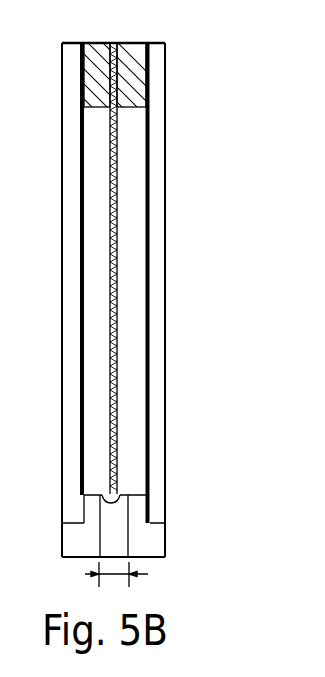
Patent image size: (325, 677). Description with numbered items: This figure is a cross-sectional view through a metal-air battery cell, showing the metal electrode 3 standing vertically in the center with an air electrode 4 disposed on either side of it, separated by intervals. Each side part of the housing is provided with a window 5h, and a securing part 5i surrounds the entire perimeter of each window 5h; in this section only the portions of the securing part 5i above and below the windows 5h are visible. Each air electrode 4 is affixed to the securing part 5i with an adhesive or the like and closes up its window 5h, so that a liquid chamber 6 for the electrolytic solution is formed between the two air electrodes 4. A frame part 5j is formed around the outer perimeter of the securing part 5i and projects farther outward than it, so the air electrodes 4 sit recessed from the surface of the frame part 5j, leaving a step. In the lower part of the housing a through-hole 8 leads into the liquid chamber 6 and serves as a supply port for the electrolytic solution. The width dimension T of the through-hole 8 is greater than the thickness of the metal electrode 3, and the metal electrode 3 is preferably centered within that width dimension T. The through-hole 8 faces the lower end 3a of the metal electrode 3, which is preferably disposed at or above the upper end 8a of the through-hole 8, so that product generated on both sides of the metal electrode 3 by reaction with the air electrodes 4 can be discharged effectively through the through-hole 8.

The metal electrode 3 is at (118, 300).
The lower end of the metal electrode 3a is at (109, 498).
The air electrode 4 is at (80, 352).
The window 5h is at (79, 173).
The securing part 5i is at (96, 79).
The frame part 5j is at (61, 537).
The liquid chamber 6 is at (100, 270).
The through-hole 8 is at (101, 538).
The upper end of the through-hole 8a is at (122, 496).
The width dimension of the through-hole T is at (113, 578).